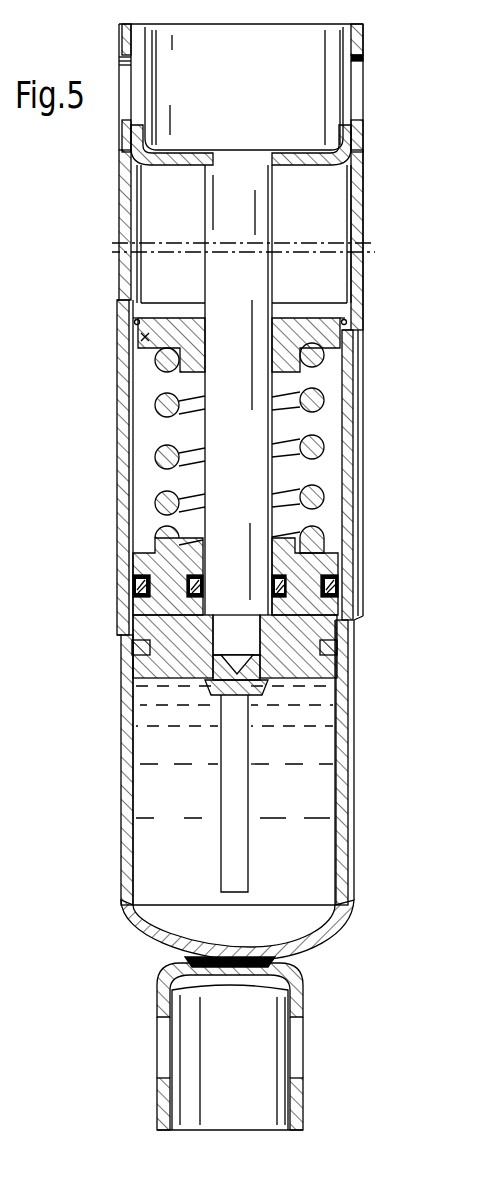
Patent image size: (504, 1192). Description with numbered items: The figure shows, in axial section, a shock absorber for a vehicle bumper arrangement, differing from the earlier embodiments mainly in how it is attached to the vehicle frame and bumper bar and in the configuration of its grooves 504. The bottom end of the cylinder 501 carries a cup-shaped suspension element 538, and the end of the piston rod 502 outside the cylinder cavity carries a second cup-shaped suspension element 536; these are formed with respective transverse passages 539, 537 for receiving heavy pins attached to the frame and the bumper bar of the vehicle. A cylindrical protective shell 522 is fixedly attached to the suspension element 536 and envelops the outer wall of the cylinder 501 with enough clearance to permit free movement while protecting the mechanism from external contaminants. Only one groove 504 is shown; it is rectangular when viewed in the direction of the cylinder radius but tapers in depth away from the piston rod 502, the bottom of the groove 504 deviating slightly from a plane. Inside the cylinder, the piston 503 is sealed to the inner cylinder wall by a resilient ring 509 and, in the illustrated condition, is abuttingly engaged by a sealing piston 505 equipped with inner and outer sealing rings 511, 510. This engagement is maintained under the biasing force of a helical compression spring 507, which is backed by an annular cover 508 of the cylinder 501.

The cylinder 501 is at (126, 746).
The piston rod 502 is at (262, 213).
The piston 503 is at (322, 668).
The groove 504 is at (224, 826).
The sealing piston 505 is at (324, 567).
The helical compression spring 507 is at (323, 400).
The annular cover 508 is at (145, 334).
The resilient ring 509 is at (132, 649).
The outer sealing ring 510 is at (333, 590).
The inner sealing ring 511 is at (275, 588).
The protective shell 522 is at (121, 201).
The suspension element 536 is at (352, 140).
The transverse passage 537 is at (138, 90).
The suspension element 538 is at (295, 1096).
The transverse passage 539 is at (290, 1046).